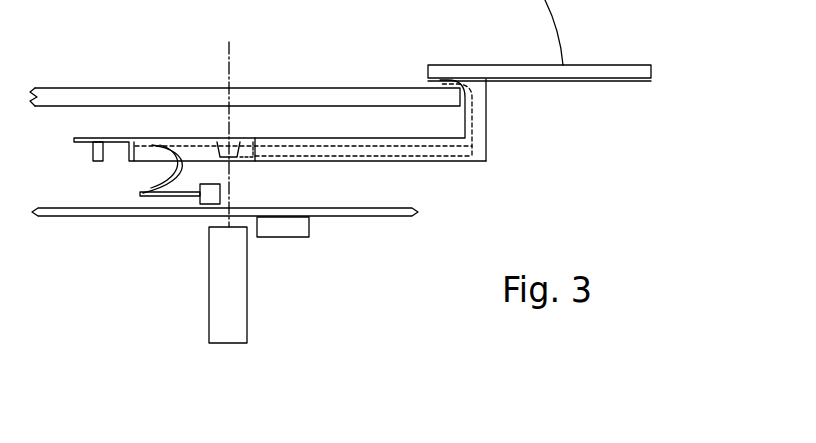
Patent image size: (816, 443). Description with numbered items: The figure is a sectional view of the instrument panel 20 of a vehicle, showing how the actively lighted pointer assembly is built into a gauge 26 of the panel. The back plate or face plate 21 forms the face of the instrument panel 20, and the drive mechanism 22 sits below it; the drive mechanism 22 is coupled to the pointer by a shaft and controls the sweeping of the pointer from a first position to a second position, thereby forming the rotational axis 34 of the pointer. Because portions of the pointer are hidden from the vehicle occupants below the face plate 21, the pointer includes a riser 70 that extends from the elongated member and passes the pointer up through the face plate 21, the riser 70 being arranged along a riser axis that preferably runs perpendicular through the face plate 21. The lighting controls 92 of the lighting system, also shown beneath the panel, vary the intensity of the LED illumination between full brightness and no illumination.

The instrument panel 20 is at (400, 183).
The face plate 21 is at (61, 100).
The drive mechanism 22 is at (232, 292).
The gauge 26 is at (317, 88).
The rotational axis 34 is at (229, 61).
The riser 70 is at (486, 115).
The lighting controls 92 is at (208, 200).